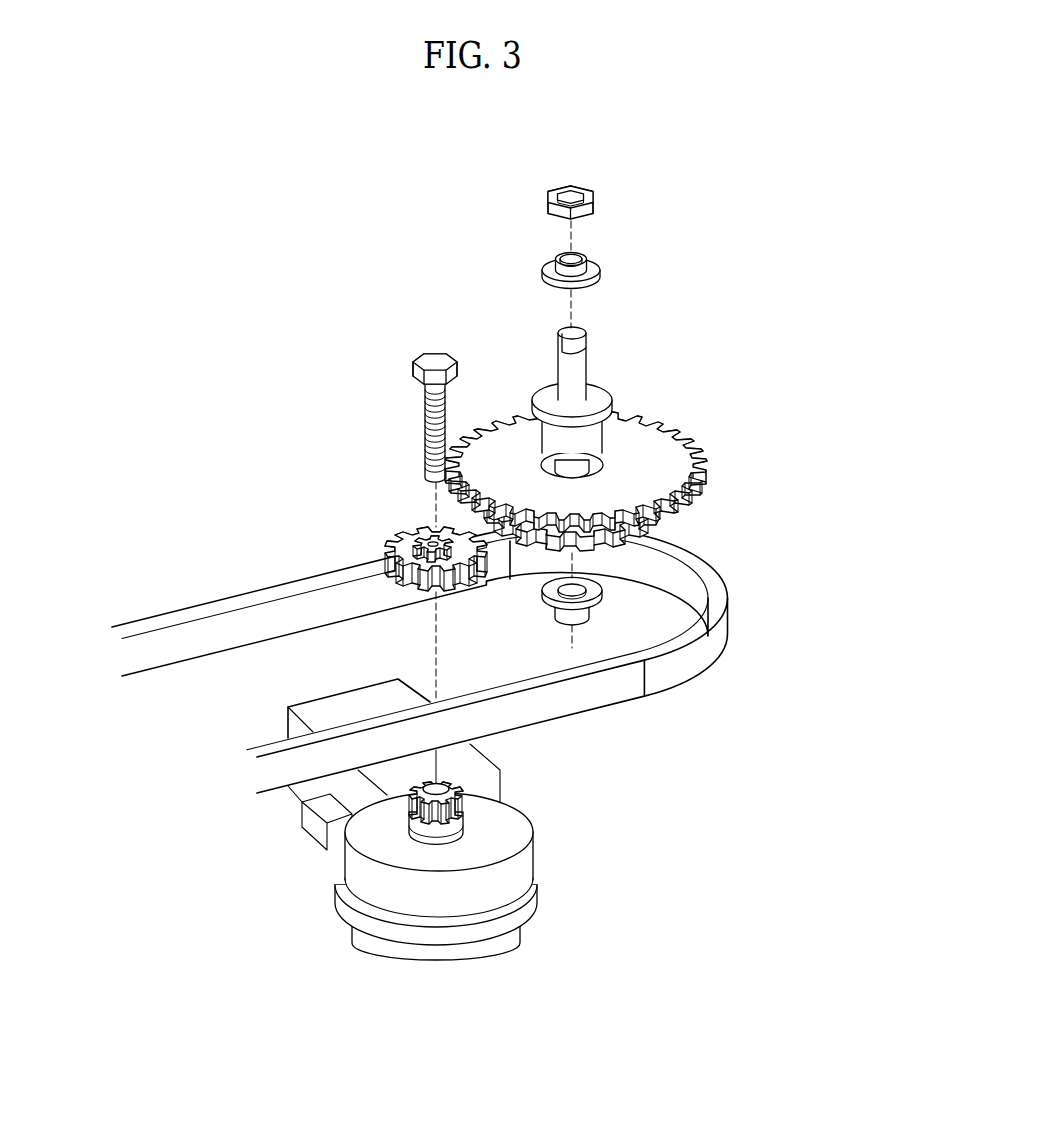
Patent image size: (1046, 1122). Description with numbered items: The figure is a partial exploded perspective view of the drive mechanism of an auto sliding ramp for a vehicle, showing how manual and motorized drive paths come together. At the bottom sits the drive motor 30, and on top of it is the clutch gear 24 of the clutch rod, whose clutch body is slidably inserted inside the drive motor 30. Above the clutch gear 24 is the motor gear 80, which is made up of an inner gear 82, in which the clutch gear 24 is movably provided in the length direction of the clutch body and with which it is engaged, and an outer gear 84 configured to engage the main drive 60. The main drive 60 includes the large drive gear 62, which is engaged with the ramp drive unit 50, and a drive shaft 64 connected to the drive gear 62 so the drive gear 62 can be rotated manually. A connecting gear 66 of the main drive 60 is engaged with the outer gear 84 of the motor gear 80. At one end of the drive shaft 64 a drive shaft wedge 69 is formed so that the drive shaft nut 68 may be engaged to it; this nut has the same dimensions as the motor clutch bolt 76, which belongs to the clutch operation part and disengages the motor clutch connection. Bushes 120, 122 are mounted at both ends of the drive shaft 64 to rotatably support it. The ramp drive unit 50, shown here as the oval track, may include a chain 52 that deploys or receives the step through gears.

The clutch gear 24 is at (470, 808).
The drive motor 30 is at (493, 855).
The ramp drive unit 50 is at (467, 659).
The chain 52 is at (720, 588).
The main drive 60 is at (599, 372).
The drive gear 62 is at (704, 461).
The drive shaft 64 is at (609, 357).
The connecting gear 66 is at (587, 545).
The drive shaft nut 68 is at (594, 203).
The drive shaft wedge 69 is at (583, 343).
The motor clutch bolt 76 is at (427, 355).
The motor gear 80 is at (391, 590).
The inner gear 82 is at (423, 532).
The outer gear 84 is at (392, 552).
The bush 120 is at (598, 268).
The bush 122 is at (583, 617).